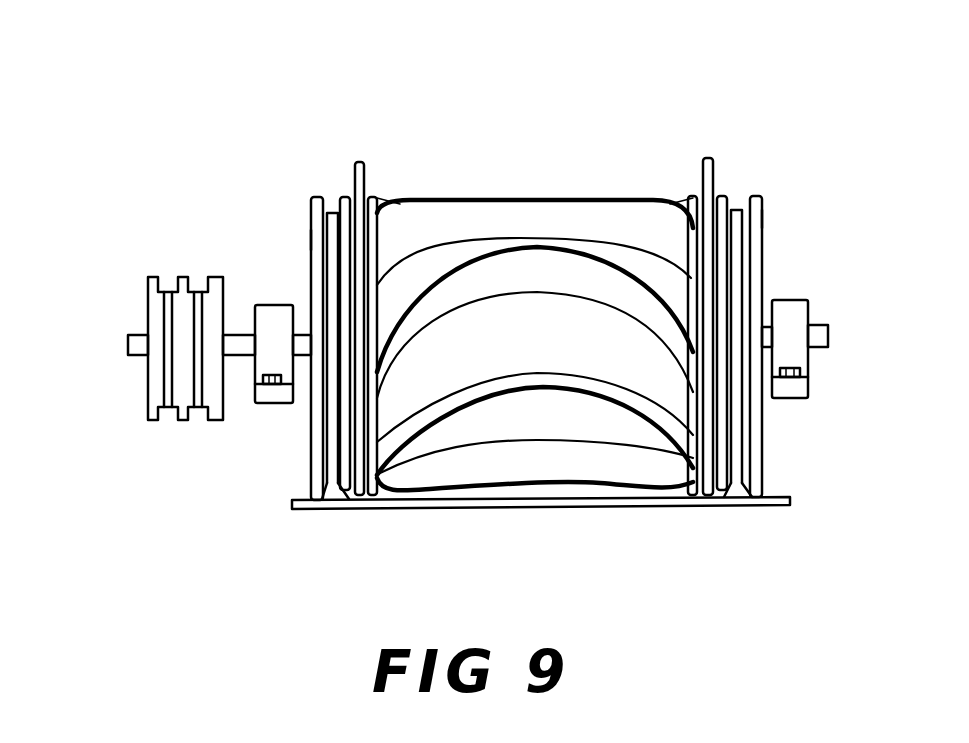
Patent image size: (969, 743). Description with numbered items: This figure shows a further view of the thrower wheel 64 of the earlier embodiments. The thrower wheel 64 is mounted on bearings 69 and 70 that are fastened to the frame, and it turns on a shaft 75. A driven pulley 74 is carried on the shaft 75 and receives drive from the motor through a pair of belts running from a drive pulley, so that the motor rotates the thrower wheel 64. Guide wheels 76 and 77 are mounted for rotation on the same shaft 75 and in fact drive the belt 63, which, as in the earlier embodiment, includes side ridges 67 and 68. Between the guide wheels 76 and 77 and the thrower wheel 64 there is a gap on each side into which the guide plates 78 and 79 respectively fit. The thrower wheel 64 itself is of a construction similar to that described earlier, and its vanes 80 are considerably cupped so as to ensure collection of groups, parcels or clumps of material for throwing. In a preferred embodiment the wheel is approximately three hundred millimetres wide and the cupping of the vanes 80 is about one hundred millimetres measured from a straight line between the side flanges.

The belt 63 is at (398, 505).
The thrower wheel 64 is at (566, 152).
The side ridge 67 is at (744, 494).
The side ridge 68 is at (333, 498).
The bearing 69 is at (790, 308).
The bearing 70 is at (278, 315).
The driven pulley 74 is at (152, 317).
The shaft 75 is at (135, 343).
The guide wheel 76 is at (756, 218).
The guide wheel 77 is at (310, 238).
The guide plate 78 is at (713, 165).
The guide plate 79 is at (357, 188).
The vane 80 is at (607, 210).